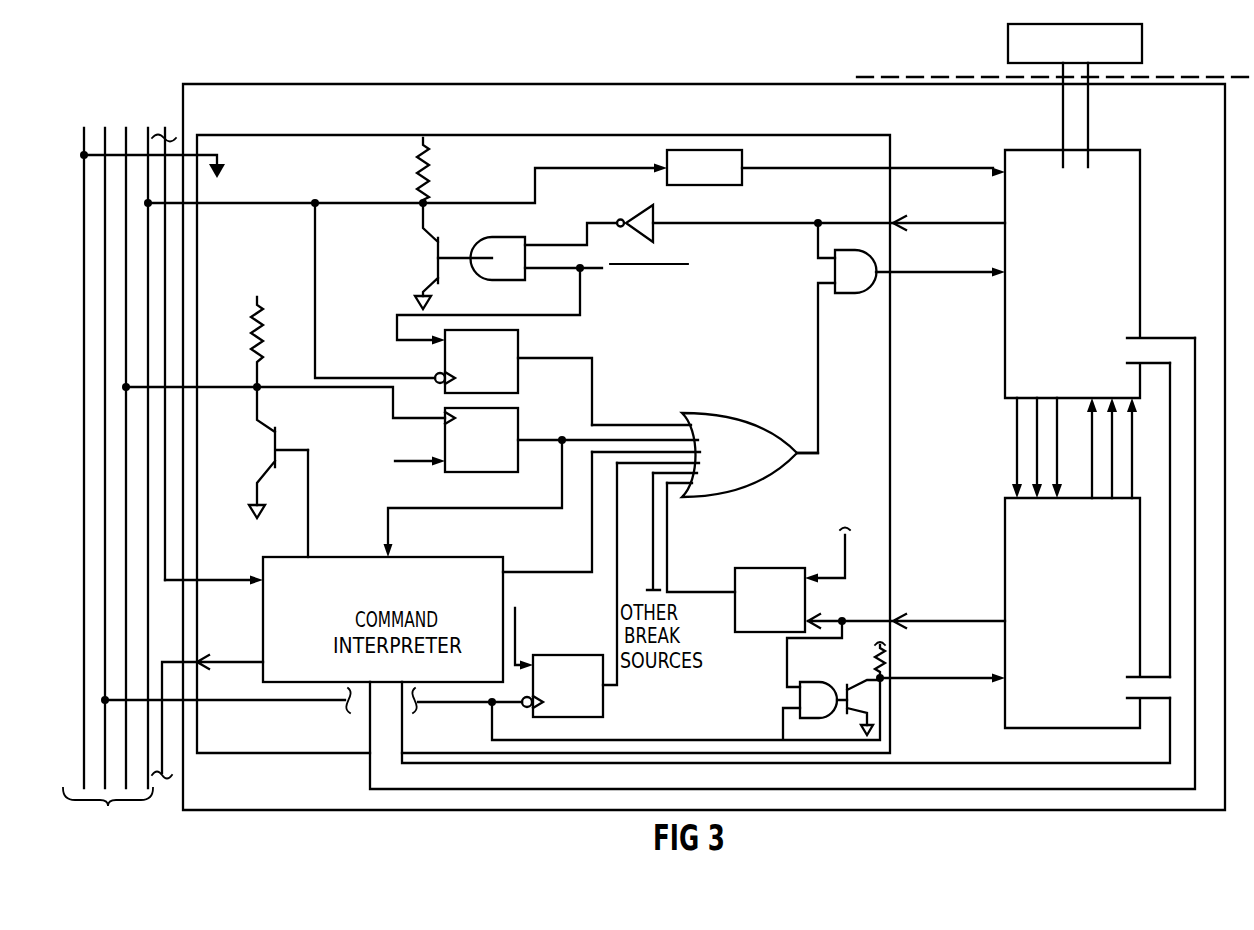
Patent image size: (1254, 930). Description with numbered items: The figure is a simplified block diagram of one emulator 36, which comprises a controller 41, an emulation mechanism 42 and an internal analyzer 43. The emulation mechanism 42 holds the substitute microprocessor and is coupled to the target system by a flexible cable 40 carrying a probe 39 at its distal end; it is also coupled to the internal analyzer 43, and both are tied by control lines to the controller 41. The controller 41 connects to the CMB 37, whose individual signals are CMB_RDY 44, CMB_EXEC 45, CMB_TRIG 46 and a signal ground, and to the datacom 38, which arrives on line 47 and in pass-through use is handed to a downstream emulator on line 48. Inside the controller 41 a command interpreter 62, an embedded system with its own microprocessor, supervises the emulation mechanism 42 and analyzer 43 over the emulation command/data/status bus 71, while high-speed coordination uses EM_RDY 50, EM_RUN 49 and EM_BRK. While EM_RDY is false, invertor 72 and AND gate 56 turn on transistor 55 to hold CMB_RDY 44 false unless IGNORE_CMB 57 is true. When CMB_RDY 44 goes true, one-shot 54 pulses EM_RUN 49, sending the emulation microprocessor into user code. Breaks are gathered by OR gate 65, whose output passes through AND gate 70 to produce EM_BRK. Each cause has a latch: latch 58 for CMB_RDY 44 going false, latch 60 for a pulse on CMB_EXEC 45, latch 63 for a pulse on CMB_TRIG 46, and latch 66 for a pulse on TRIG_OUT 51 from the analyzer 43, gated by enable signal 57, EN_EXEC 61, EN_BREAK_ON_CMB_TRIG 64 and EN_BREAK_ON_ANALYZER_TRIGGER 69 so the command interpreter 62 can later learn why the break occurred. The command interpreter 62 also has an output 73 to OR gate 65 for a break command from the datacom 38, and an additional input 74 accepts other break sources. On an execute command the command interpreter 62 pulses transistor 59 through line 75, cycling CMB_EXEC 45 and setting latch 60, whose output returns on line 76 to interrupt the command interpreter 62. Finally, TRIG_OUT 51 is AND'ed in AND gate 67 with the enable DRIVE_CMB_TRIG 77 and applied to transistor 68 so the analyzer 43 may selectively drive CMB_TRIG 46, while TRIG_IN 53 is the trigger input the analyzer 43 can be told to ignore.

The emulator 36 is at (367, 84).
The CMB 37 is at (128, 827).
The datacom 38 is at (185, 62).
The probe 39 is at (1140, 64).
The flexible cable 40 is at (1090, 132).
The controller 41 is at (340, 135).
The emulation mechanism 42 is at (1008, 150).
The internal analyzer 43 is at (1005, 516).
The CMB_RDY 44 is at (236, 205).
The CMB_EXEC 45 is at (214, 386).
The CMB_TRIG 46 is at (206, 700).
The datacom line 47 is at (216, 578).
The datacom line 48 is at (220, 660).
The EM_RUN line 49 is at (927, 175).
The EM_RDY line 50 is at (943, 220).
The TRIG_OUT 51 is at (967, 273).
The TRIG_IN 53 is at (887, 680).
The one-shot 54 is at (725, 150).
The transistor 55 is at (435, 251).
The AND gate 56 is at (507, 268).
The enable signal 57 is at (687, 277).
The latch 58 is at (532, 323).
The transistor 59 is at (268, 441).
The latch 60 is at (520, 410).
The EN_EXEC 61 is at (405, 462).
The command interpreter 62 is at (440, 682).
The latch 63 is at (578, 655).
The EN_BREAK_ON_CMB_TRIG 64 is at (516, 652).
The OR gate 65 is at (755, 416).
The latch 66 is at (777, 568).
The AND gate 67 is at (822, 682).
The transistor 68 is at (866, 681).
The EN_BREAK_ON_ANALYZER_TRIGGER 69 is at (847, 565).
The AND gate 70 is at (852, 293).
The emulation command/data/status bus 71 is at (370, 770).
The invertor 72 is at (657, 228).
The command interpreter output 73 is at (527, 572).
The additional input 74 is at (653, 510).
The line 75 is at (310, 500).
The line 76 is at (562, 456).
The DRIVE_CMB_TRIG 77 is at (772, 727).